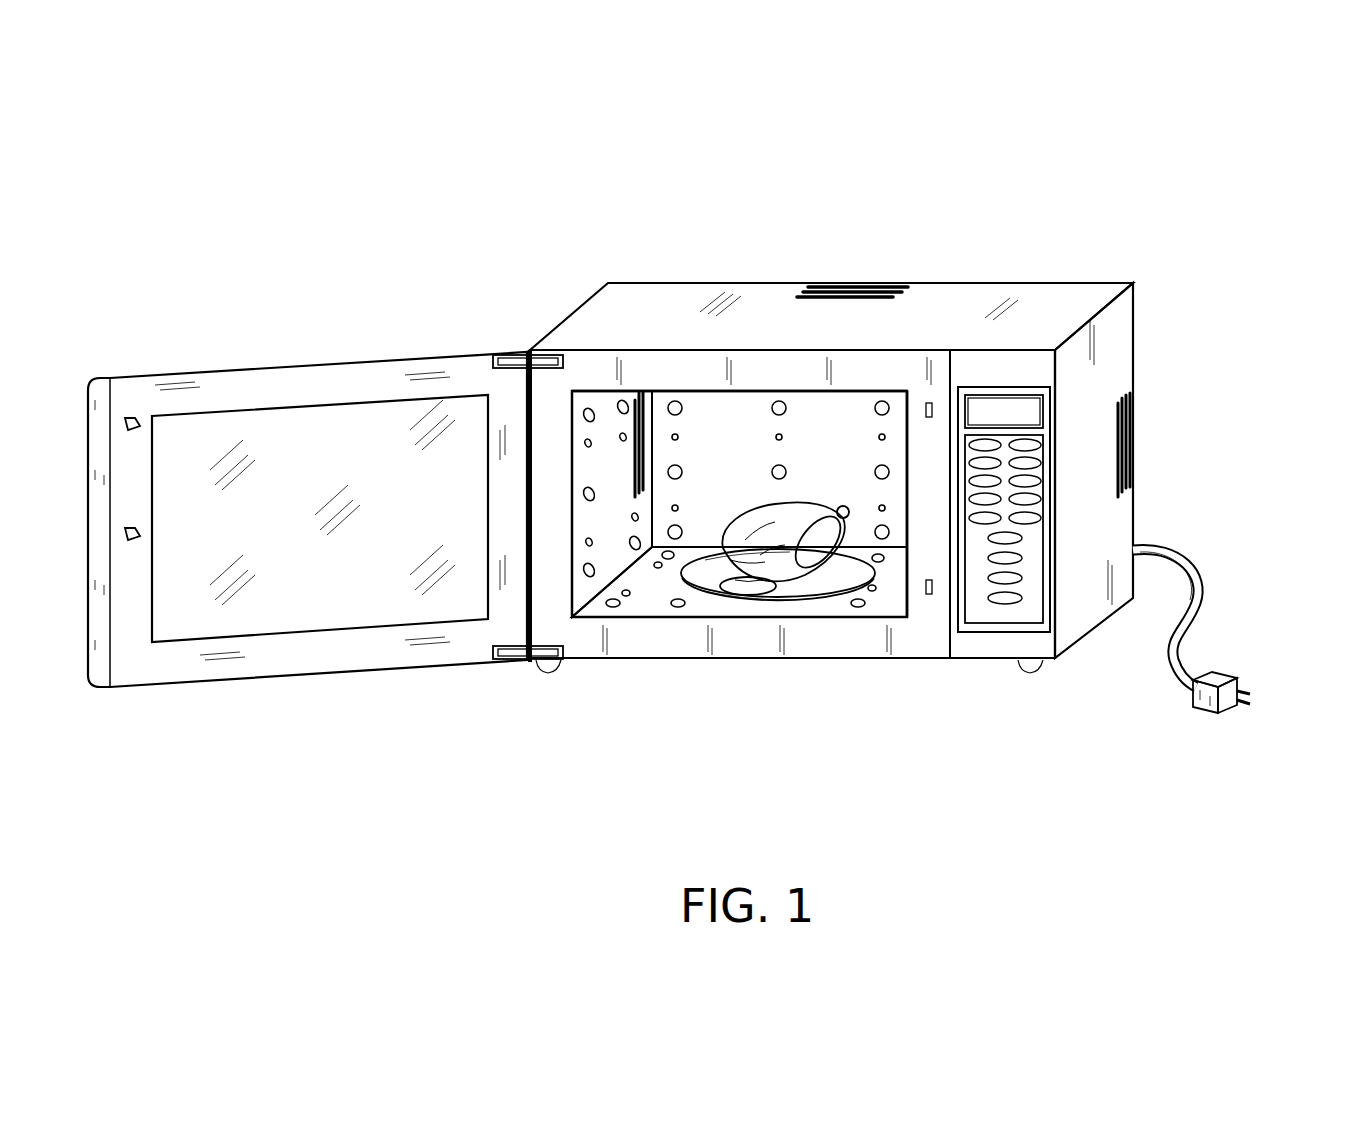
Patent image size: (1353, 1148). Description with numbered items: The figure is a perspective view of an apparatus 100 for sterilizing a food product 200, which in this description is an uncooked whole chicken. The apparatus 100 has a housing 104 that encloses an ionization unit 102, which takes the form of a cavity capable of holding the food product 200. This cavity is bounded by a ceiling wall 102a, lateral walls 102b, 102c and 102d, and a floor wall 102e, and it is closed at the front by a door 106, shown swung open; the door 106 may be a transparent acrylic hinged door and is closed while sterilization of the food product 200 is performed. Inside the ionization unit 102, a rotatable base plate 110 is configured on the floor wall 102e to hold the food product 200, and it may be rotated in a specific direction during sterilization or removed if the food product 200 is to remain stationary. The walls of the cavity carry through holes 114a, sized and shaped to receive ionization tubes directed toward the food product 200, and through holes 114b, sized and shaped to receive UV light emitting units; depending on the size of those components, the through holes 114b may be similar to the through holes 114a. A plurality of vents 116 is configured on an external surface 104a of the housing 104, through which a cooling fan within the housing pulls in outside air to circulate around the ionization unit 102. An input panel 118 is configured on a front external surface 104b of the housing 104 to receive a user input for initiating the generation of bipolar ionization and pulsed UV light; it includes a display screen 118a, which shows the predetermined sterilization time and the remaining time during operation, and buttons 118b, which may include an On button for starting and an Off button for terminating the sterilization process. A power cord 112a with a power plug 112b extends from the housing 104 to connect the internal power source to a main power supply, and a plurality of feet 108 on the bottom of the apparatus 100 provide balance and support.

The apparatus 100 is at (1140, 195).
The ionization unit 102 is at (810, 630).
The ceiling wall 102a is at (847, 393).
The lateral wall 102b is at (607, 410).
The lateral wall 102c is at (753, 413).
The lateral wall 102d is at (898, 493).
The floor wall 102e is at (888, 605).
The housing 104 is at (636, 268).
The external surface 104a is at (855, 335).
The front external surface 104b is at (1030, 378).
The door 106 is at (320, 340).
The feet 108 is at (553, 664).
The rotatable base plate 110 is at (768, 610).
The power cord 112a is at (1178, 662).
The power plug 112b is at (1240, 690).
The through holes 114a is at (588, 442).
The through holes 114b is at (590, 398).
The vents 116 is at (855, 286).
The input panel 118 is at (1070, 405).
The display screen 118a is at (1038, 398).
The buttons 118b is at (1045, 478).
The food product 200 is at (760, 594).